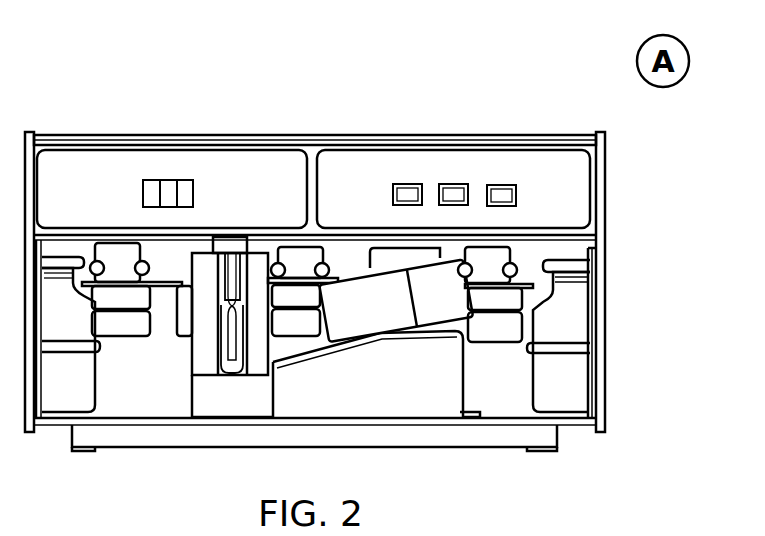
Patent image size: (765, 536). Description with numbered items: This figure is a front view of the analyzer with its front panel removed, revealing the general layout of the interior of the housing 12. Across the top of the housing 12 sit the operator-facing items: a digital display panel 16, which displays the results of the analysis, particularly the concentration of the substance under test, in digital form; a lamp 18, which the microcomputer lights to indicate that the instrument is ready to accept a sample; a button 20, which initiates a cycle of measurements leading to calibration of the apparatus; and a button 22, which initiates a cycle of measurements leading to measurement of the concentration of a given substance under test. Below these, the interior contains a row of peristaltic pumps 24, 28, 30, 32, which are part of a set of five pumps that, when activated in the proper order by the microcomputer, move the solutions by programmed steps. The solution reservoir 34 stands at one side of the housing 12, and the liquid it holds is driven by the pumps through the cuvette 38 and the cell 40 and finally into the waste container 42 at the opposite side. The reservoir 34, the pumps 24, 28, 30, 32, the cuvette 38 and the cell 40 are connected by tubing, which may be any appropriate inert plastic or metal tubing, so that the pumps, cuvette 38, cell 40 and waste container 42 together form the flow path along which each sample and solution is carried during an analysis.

The housing 12 is at (601, 314).
The digital display panel 16 is at (155, 156).
The lamp 18 is at (398, 196).
The button 20 is at (451, 196).
The button 22 is at (505, 196).
The peristaltic pump 24 is at (132, 279).
The peristaltic pump 28 is at (315, 279).
The peristaltic pump 30 is at (390, 262).
The peristaltic pump 32 is at (500, 281).
The solution reservoir 34 is at (57, 403).
The cuvette 38 is at (205, 348).
The cell 40 is at (373, 325).
The waste container 42 is at (563, 403).